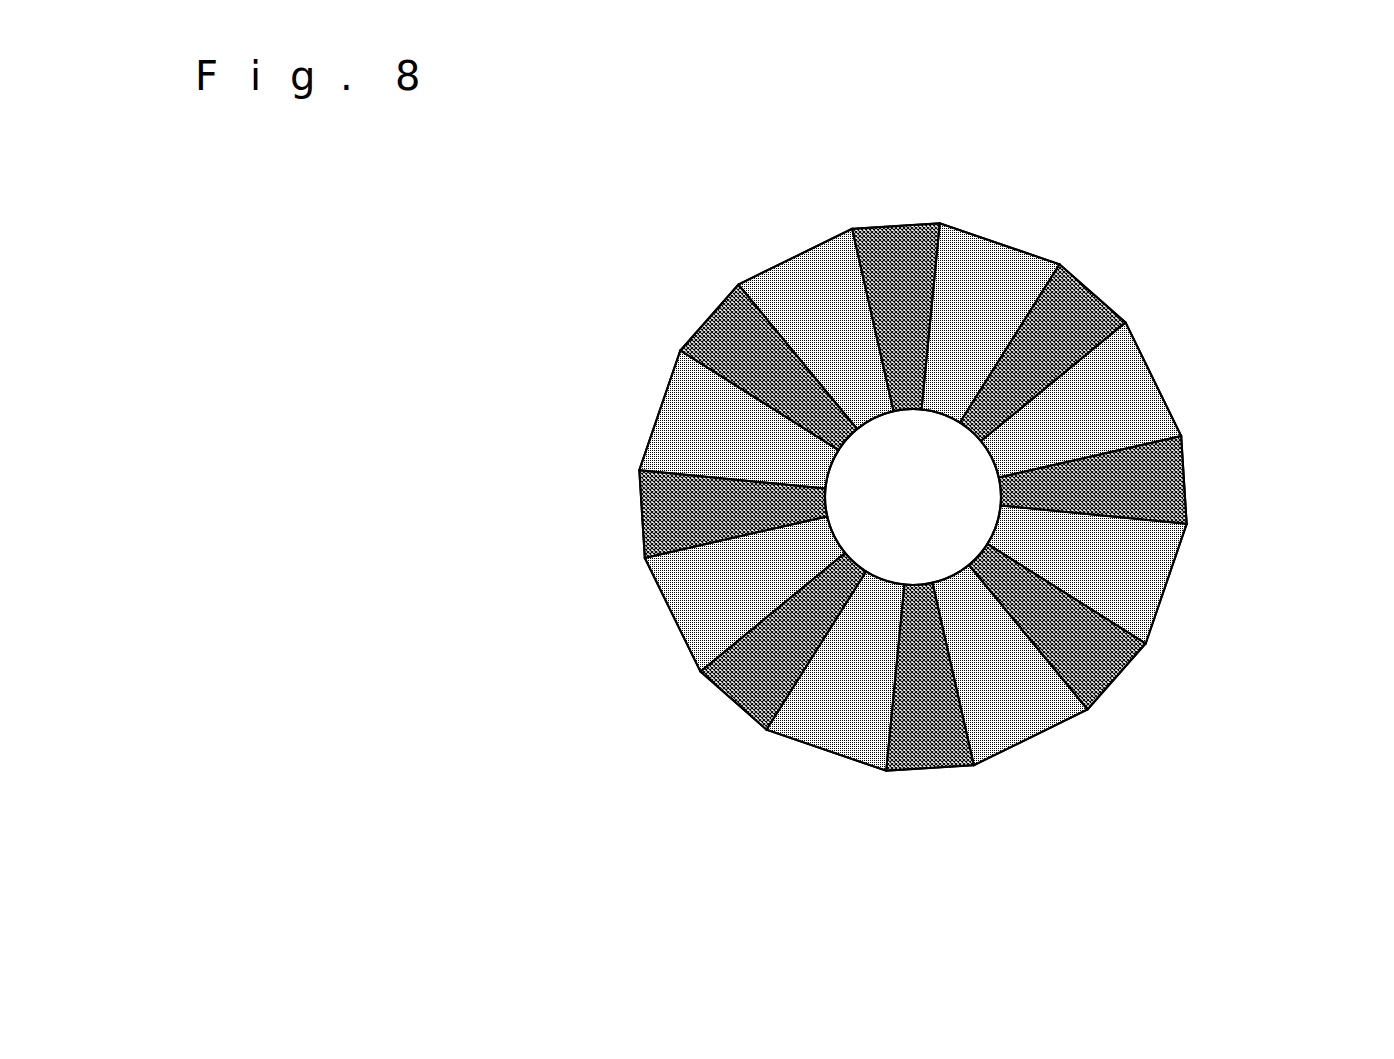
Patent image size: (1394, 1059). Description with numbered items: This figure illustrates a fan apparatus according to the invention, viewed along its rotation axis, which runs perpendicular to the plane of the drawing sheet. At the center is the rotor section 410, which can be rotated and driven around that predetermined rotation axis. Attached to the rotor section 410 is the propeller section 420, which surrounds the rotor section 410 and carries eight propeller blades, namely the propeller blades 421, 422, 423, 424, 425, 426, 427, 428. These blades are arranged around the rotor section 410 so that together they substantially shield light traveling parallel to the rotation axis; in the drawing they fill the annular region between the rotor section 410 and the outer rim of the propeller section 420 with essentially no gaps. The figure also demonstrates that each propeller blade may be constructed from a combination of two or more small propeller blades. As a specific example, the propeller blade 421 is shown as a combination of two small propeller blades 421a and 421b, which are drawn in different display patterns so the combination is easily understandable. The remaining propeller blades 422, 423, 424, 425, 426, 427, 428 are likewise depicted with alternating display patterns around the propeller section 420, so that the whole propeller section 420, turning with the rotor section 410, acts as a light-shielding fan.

The propeller section 420 is at (883, 788).
The rotor section 410 is at (995, 523).
The propeller blade 421 is at (1090, 285).
The small propeller blade 421a is at (1038, 198).
The small propeller blade 421b is at (1108, 304).
The propeller blade 422 is at (853, 226).
The propeller blade 423 is at (680, 348).
The propeller blade 424 is at (643, 563).
The propeller blade 425 is at (765, 734).
The propeller blade 426 is at (970, 772).
The propeller blade 427 is at (1143, 657).
The propeller blade 428 is at (1183, 430).